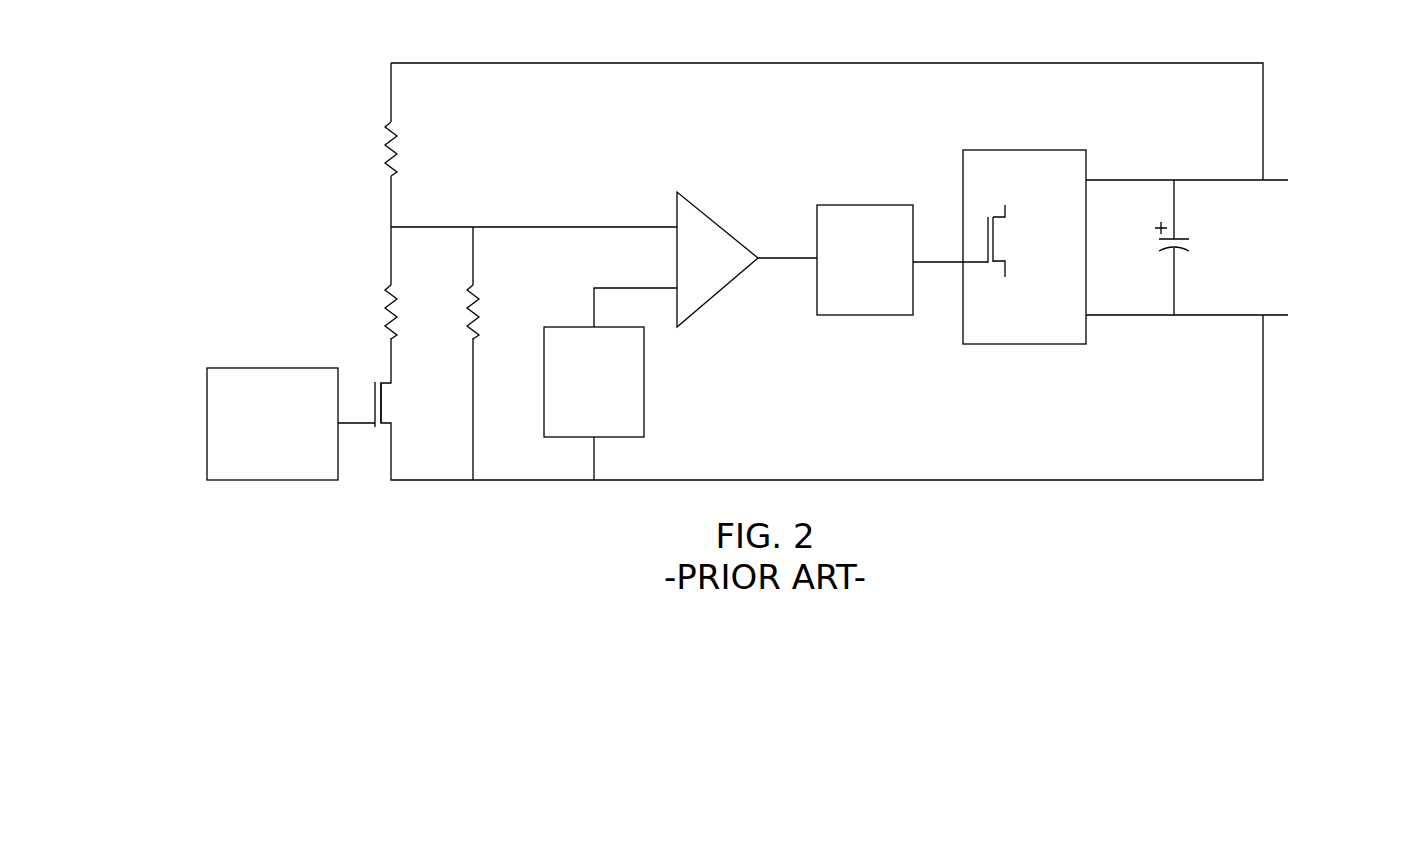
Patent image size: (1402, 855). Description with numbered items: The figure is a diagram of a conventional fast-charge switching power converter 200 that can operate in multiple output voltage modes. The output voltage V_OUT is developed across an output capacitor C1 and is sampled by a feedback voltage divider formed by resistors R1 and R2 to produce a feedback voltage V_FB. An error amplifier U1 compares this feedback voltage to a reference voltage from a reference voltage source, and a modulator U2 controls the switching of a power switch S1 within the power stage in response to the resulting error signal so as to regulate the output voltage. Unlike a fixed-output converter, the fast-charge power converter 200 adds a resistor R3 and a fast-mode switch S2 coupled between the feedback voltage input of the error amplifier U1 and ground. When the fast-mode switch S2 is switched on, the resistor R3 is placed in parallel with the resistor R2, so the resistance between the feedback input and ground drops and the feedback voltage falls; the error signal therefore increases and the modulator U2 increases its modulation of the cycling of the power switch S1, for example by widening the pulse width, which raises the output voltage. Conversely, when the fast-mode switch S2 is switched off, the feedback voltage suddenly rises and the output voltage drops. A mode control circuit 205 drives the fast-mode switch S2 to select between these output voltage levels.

The fast-charge power converter 200 is at (1036, 31).
The mode control circuit 205 is at (207, 423).
The resistor R1 is at (407, 149).
The resistor R2 is at (489, 312).
The resistor R3 is at (407, 312).
The power switch S1 is at (1011, 241).
The fast-mode switch S2 is at (382, 404).
The error amplifier U1 is at (717, 259).
The modulator U2 is at (865, 260).
The output capacitor C1 is at (1188, 238).